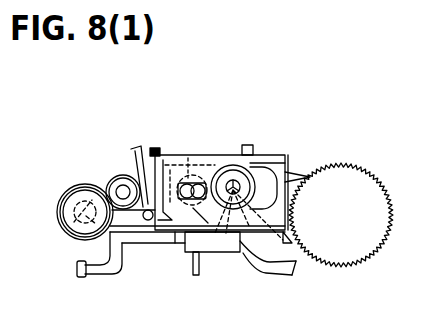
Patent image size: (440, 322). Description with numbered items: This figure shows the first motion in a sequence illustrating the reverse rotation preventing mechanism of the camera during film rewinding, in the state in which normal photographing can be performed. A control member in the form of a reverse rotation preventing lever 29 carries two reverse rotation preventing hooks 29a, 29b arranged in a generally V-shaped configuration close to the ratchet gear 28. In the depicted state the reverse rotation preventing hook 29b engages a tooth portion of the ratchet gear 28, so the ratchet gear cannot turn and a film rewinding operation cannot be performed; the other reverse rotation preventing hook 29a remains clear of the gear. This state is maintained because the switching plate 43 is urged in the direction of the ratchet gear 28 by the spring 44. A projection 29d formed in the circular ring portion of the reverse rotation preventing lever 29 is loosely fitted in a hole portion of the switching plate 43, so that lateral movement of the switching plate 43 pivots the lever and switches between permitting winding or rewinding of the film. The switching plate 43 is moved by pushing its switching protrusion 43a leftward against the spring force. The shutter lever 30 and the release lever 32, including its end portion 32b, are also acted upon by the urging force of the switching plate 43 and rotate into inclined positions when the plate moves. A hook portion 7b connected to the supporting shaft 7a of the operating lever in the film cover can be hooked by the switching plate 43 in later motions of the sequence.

The supporting shaft 7a is at (62, 232).
The hook portion 7b is at (78, 182).
The ratchet gear 28 is at (383, 180).
The reverse rotation preventing lever 29 is at (263, 157).
The reverse rotation preventing hook 29a is at (262, 278).
The reverse rotation preventing hook 29b is at (300, 174).
The projection 29d is at (223, 150).
The shutter lever 30 is at (199, 272).
The release lever 32 is at (158, 245).
The lever end 32b is at (300, 275).
The switching plate 43 is at (172, 155).
The switching protrusion 43a is at (247, 145).
The spring 44 is at (159, 148).